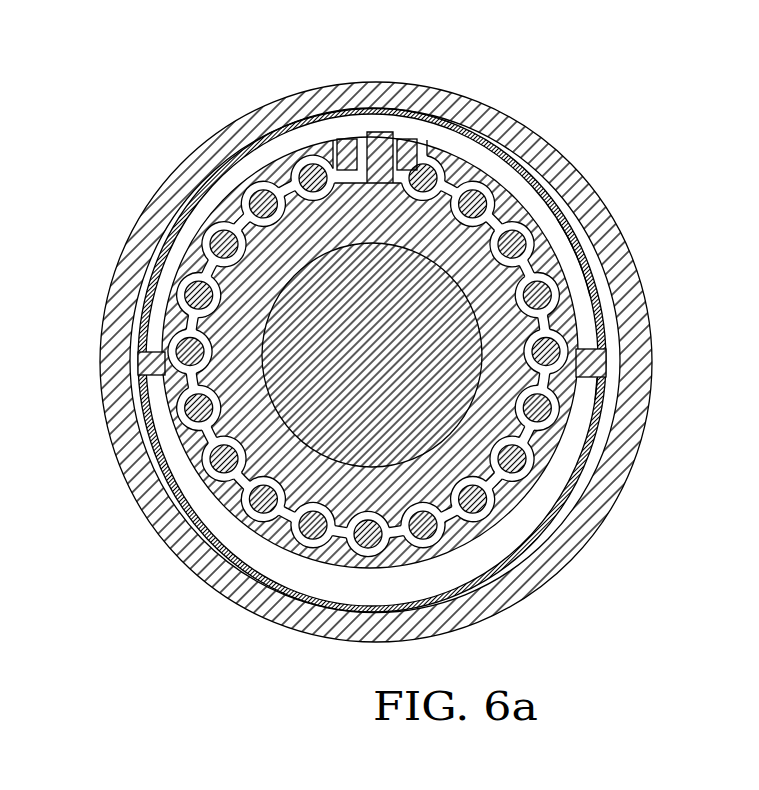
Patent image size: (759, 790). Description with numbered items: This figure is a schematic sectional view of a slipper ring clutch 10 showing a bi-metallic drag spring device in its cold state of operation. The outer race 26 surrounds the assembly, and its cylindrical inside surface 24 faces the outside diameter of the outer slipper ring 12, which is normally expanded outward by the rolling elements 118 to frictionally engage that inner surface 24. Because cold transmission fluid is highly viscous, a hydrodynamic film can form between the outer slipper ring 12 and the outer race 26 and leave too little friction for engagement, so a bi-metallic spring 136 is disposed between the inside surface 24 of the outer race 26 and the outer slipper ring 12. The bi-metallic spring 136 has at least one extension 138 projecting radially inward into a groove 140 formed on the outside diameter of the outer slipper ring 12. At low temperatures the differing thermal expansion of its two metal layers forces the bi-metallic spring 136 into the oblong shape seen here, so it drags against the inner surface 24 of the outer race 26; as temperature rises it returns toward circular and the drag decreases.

The slipper ring clutch 10 is at (419, 357).
The outer slipper ring 12 is at (560, 437).
The cylindrical inside surface 24 is at (572, 494).
The outer race 26 is at (583, 528).
The rolling elements 118 is at (367, 547).
The bi-metallic spring 136 is at (582, 248).
The extension 138 is at (600, 362).
The groove 140 is at (593, 380).